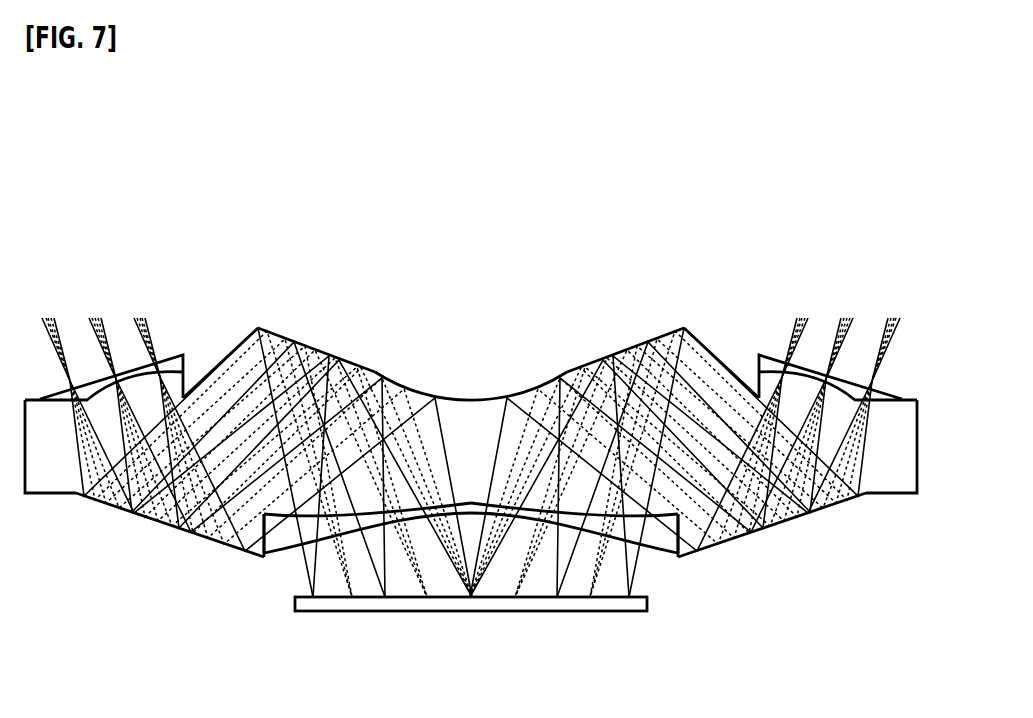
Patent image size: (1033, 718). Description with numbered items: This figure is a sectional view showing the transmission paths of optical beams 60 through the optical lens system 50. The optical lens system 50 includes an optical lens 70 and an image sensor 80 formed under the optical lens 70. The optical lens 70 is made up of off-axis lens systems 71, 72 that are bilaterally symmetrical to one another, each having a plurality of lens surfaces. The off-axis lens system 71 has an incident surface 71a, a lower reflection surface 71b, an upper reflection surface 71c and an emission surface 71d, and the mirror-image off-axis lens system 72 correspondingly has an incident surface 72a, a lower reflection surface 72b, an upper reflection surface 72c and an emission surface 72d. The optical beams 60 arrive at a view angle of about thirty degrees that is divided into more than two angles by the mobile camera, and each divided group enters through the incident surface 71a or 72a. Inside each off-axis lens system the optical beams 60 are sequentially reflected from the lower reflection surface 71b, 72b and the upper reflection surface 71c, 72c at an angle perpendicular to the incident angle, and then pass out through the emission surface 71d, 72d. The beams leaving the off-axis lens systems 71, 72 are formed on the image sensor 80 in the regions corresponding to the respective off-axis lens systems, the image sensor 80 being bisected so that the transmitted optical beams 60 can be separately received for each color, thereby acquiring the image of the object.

The optical lens system 50 is at (736, 156).
The optical beams 60 is at (507, 456).
The optical lens 70 is at (402, 209).
The off-axis lens system 71 is at (592, 320).
The incident surface 71a is at (819, 365).
The lower reflection surface 71b is at (784, 533).
The upper reflection surface 71c is at (644, 343).
The emission surface 71d is at (582, 533).
The off-axis lens system 72 is at (346, 320).
The incident surface 72a is at (123, 365).
The lower reflection surface 72b is at (158, 533).
The upper reflection surface 72c is at (299, 343).
The emission surface 72d is at (360, 533).
The image sensor 80 is at (472, 605).